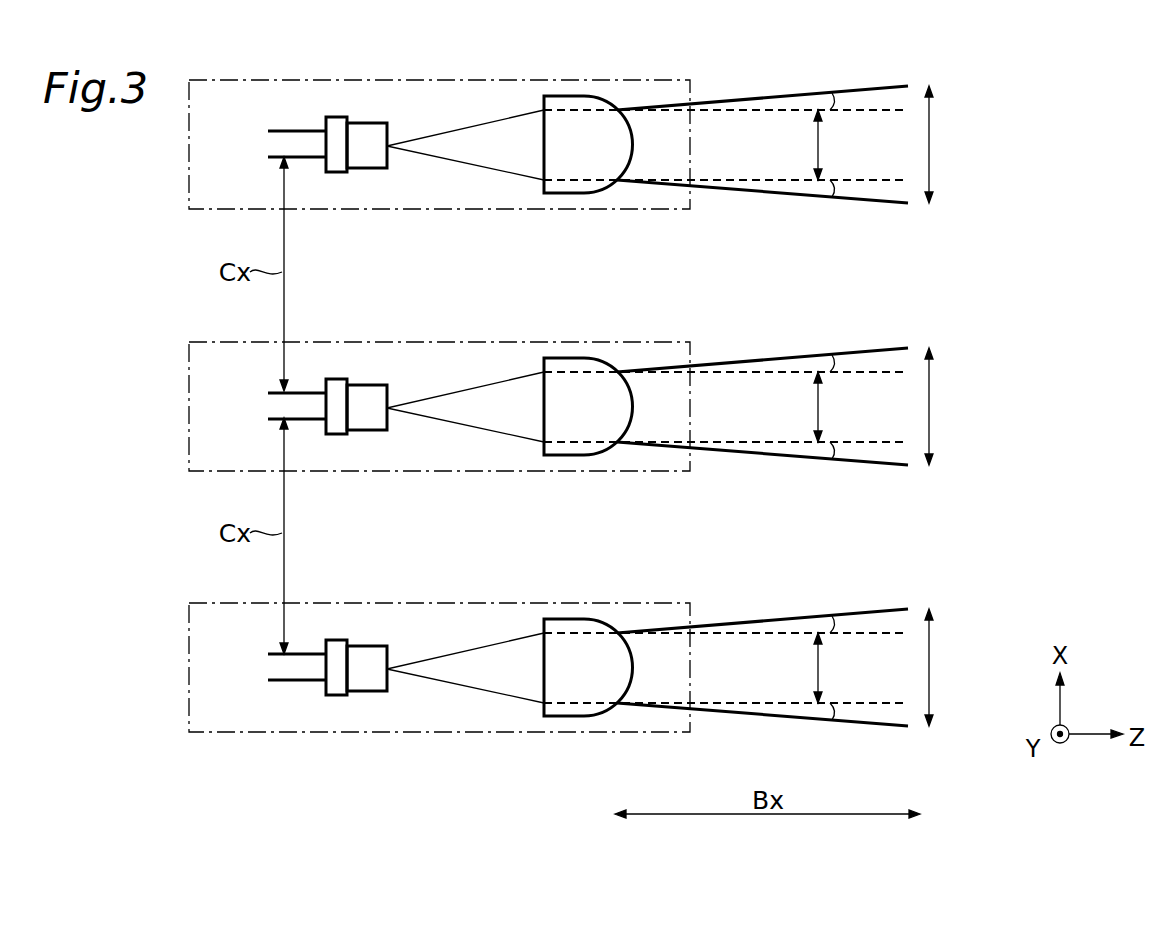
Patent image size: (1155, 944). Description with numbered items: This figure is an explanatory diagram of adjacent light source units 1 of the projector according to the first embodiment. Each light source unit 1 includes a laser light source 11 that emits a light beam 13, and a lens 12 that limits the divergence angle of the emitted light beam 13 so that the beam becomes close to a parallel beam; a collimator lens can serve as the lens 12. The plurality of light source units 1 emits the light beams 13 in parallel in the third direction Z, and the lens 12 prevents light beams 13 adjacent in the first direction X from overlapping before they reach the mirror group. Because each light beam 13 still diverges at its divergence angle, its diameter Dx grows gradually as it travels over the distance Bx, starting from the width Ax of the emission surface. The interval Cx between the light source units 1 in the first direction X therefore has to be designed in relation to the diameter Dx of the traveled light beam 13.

The light source unit 1 is at (376, 81).
The laser light source 11 is at (367, 156).
The lens 12 is at (572, 160).
The light beam 13 is at (752, 191).